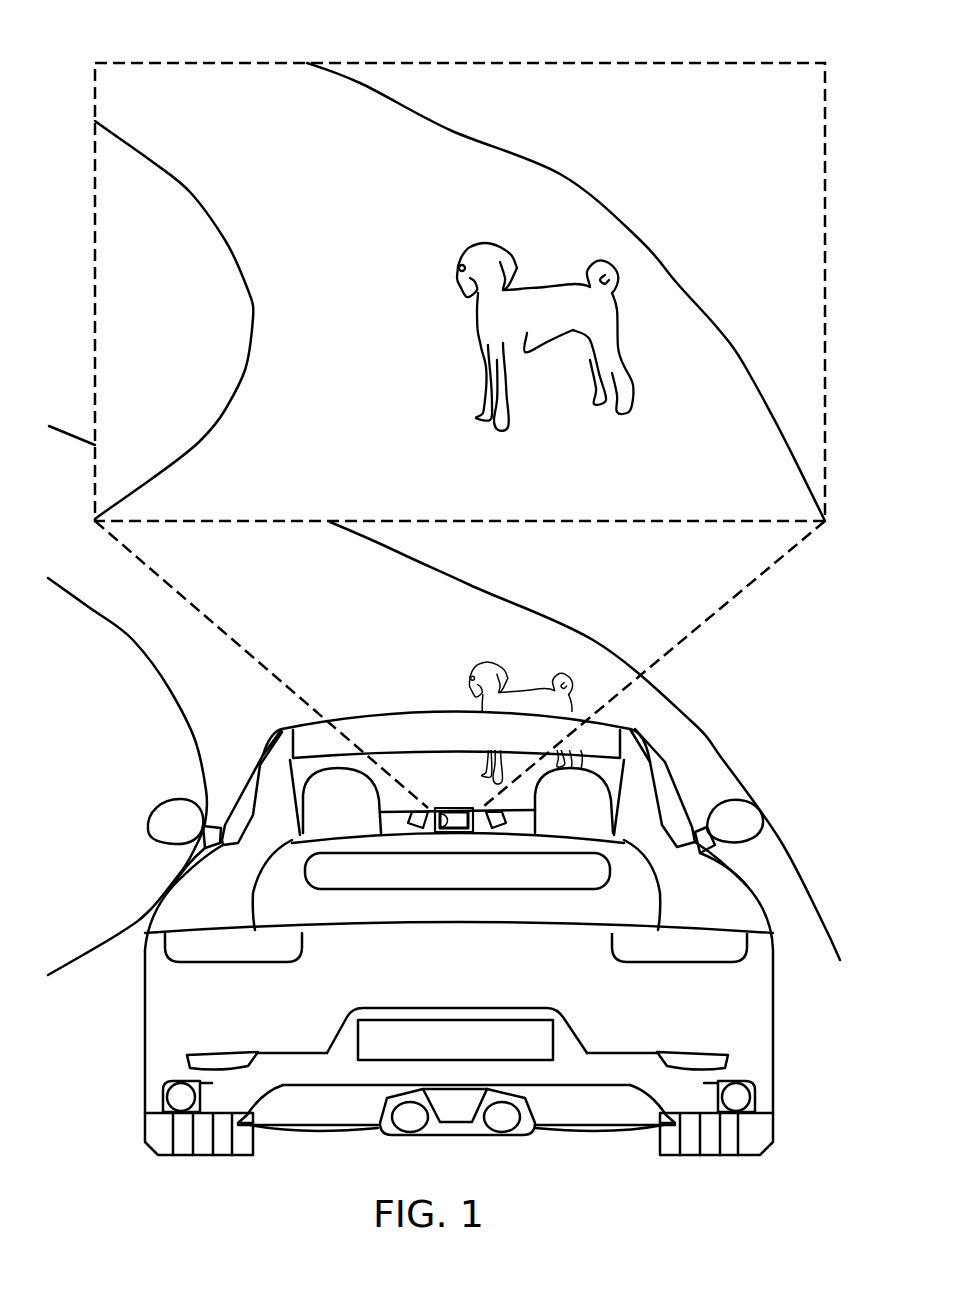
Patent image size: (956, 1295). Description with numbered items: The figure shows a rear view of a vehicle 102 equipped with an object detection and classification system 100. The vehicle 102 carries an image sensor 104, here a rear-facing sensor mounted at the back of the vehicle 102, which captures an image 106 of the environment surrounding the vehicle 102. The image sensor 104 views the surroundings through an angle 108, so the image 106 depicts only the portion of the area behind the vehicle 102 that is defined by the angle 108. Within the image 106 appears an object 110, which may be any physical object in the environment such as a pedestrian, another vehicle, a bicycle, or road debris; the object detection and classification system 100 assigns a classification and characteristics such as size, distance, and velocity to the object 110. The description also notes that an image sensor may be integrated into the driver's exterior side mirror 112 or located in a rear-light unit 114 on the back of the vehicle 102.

The object detection and classification system 100 is at (166, 34).
The vehicle 102 is at (472, 1048).
The image sensor 104 is at (455, 807).
The image 106 is at (157, 94).
The angle 108 is at (697, 630).
The object 110 is at (460, 268).
The driver's exterior side mirror 112 is at (186, 802).
The rear-light unit 114 is at (678, 965).